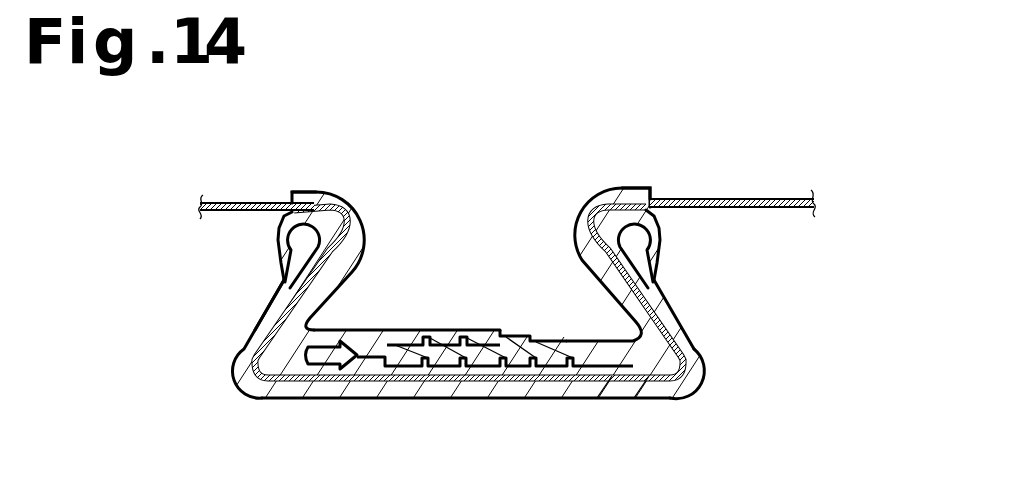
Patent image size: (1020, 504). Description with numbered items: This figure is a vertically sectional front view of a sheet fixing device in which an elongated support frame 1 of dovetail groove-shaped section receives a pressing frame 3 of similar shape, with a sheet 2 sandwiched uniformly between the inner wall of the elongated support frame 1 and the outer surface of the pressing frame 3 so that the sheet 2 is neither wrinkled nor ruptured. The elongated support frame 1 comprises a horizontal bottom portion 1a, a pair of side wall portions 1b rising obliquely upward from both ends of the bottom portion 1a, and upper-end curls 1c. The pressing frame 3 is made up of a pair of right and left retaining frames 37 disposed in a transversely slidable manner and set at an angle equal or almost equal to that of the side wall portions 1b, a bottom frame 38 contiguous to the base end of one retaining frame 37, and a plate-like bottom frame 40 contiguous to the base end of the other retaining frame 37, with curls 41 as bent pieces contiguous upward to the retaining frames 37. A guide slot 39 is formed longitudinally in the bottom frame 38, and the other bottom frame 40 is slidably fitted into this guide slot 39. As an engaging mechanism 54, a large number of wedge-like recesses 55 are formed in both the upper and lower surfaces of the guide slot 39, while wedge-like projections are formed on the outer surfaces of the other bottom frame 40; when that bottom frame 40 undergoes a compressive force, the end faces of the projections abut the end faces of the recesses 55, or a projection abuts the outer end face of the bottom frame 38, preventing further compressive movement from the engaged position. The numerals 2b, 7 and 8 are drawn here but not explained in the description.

The elongated support frame 1 is at (447, 404).
The bottom portion 1a is at (377, 392).
The side wall portions 1b is at (272, 303).
The upper-end curls 1c is at (283, 222).
The sheet 2 is at (790, 210).
The core insert portion 2b is at (546, 400).
The pressing frame 3 is at (477, 262).
The corner portion 7 is at (689, 362).
The projection 8 is at (412, 330).
The retaining frames 37 is at (340, 290).
The bottom frame 38 is at (415, 368).
The guide slot 39 is at (338, 390).
The plate-like bottom frame 40 is at (630, 400).
The curls 41 is at (637, 189).
The engaging mechanism 54 is at (520, 334).
The wedge-like recesses 55 is at (387, 333).